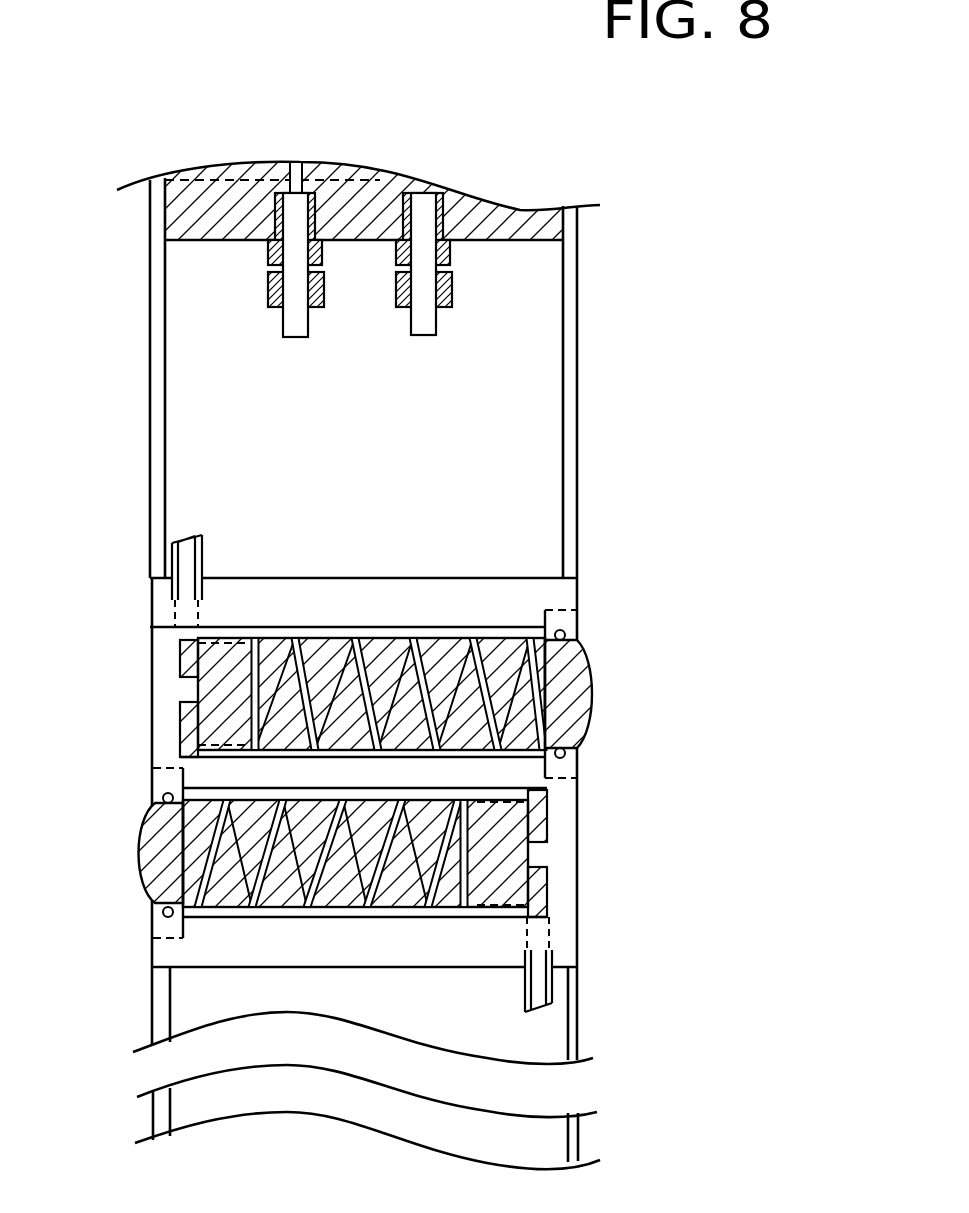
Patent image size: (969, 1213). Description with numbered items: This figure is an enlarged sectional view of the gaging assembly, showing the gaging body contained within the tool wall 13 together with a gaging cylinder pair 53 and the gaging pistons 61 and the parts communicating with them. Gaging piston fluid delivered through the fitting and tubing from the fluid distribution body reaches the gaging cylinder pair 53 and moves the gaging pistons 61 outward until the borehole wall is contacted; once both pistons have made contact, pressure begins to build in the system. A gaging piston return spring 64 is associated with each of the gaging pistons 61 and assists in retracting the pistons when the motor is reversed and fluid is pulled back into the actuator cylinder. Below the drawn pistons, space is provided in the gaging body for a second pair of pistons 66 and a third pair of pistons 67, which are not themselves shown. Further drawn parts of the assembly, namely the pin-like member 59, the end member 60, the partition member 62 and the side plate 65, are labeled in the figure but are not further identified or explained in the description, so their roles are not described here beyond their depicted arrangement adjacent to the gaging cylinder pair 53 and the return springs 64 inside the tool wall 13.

The tool wall 13 is at (152, 1007).
The gaging cylinder pair 53 is at (393, 297).
The guide pins 59 is at (193, 535).
The end abutment member 60 is at (197, 747).
The gaging pistons 61 is at (593, 662).
The partition plate 62 is at (507, 575).
The gaging piston return spring 64 is at (517, 708).
The mounting plate 65 is at (582, 765).
The second pair of pistons 66 is at (580, 1083).
The third pair of pistons 67 is at (577, 1095).